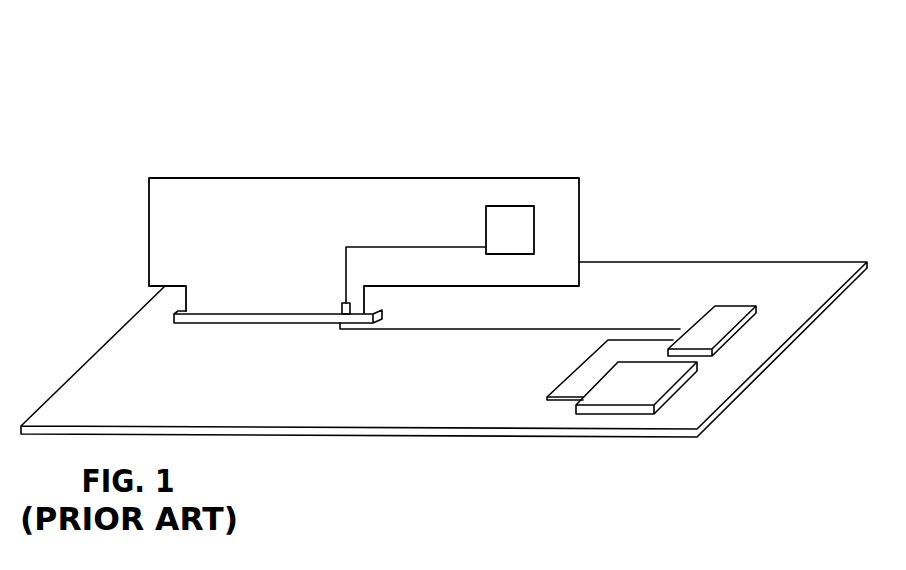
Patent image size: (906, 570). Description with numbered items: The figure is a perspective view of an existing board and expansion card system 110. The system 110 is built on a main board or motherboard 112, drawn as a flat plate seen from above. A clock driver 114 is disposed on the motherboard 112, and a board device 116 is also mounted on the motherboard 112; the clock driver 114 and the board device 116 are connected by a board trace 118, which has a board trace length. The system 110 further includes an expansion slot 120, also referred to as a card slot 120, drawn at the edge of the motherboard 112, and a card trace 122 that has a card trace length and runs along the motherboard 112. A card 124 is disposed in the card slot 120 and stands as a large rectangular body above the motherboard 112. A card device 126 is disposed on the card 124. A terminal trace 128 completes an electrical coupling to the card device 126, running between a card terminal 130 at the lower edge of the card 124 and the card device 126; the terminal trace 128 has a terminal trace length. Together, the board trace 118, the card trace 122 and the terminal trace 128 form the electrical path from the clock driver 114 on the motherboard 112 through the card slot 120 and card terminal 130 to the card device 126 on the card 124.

The system 110 is at (577, 108).
The motherboard 112 is at (800, 275).
The clock driver 114 is at (725, 312).
The board device 116 is at (643, 383).
The board trace 118 is at (553, 402).
The expansion slot 120 is at (274, 324).
The card trace 122 is at (470, 331).
The card 124 is at (353, 192).
The card device 126 is at (517, 219).
The terminal trace 128 is at (423, 246).
The card terminal 130 is at (341, 303).